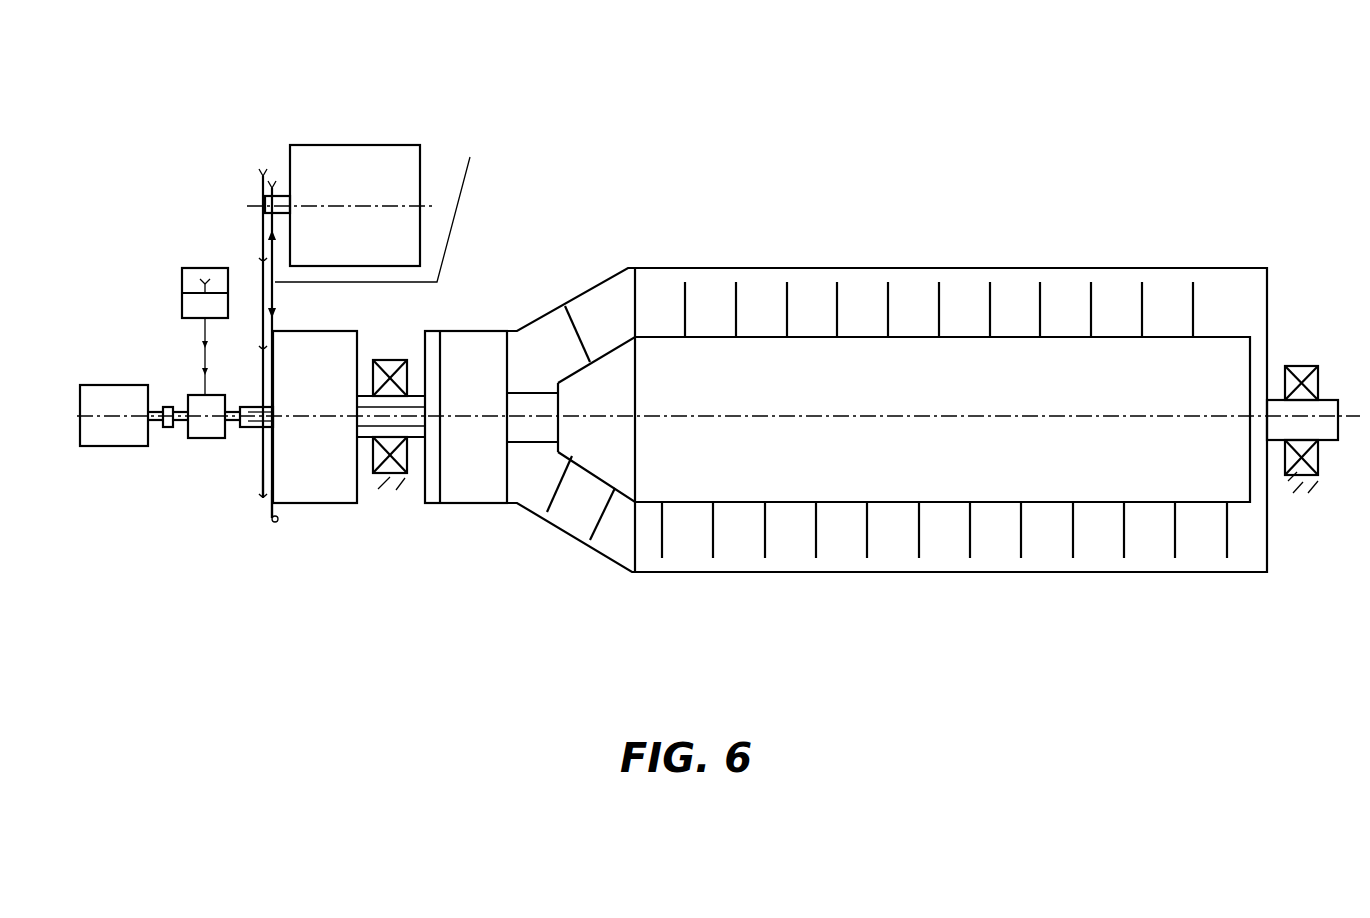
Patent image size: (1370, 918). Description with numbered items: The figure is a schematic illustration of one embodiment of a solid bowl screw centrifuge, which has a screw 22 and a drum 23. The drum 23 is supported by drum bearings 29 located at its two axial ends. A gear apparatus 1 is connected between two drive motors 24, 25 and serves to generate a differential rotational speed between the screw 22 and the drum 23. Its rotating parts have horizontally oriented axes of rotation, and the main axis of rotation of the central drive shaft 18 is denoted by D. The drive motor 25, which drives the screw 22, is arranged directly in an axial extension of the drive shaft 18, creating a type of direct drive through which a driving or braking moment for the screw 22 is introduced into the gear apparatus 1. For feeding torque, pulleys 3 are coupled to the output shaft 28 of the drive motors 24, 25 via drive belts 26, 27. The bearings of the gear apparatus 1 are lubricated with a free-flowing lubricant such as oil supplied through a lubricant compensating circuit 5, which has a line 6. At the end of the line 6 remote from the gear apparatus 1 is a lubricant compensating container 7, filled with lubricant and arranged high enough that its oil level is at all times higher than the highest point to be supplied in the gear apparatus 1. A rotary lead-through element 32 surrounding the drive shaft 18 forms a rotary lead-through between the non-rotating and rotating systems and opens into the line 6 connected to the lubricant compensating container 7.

The gear apparatus 1 is at (250, 432).
The pulley 3 is at (255, 540).
The lubricant compensating circuit 5 is at (192, 331).
The line 6 is at (207, 363).
The lubricant compensating container 7 is at (203, 267).
The drive shaft 18 is at (186, 456).
The screw 22 is at (788, 303).
The drum 23 is at (980, 268).
The drive motor 24 is at (403, 145).
The drive motor 25 is at (125, 447).
The drive belt 26 is at (260, 250).
The drive belt 27 is at (390, 202).
The output shaft 28 is at (326, 119).
The drum bearings 29 is at (387, 478).
The rotary lead-through element 32 is at (203, 408).
The main axis of rotation D is at (1303, 420).